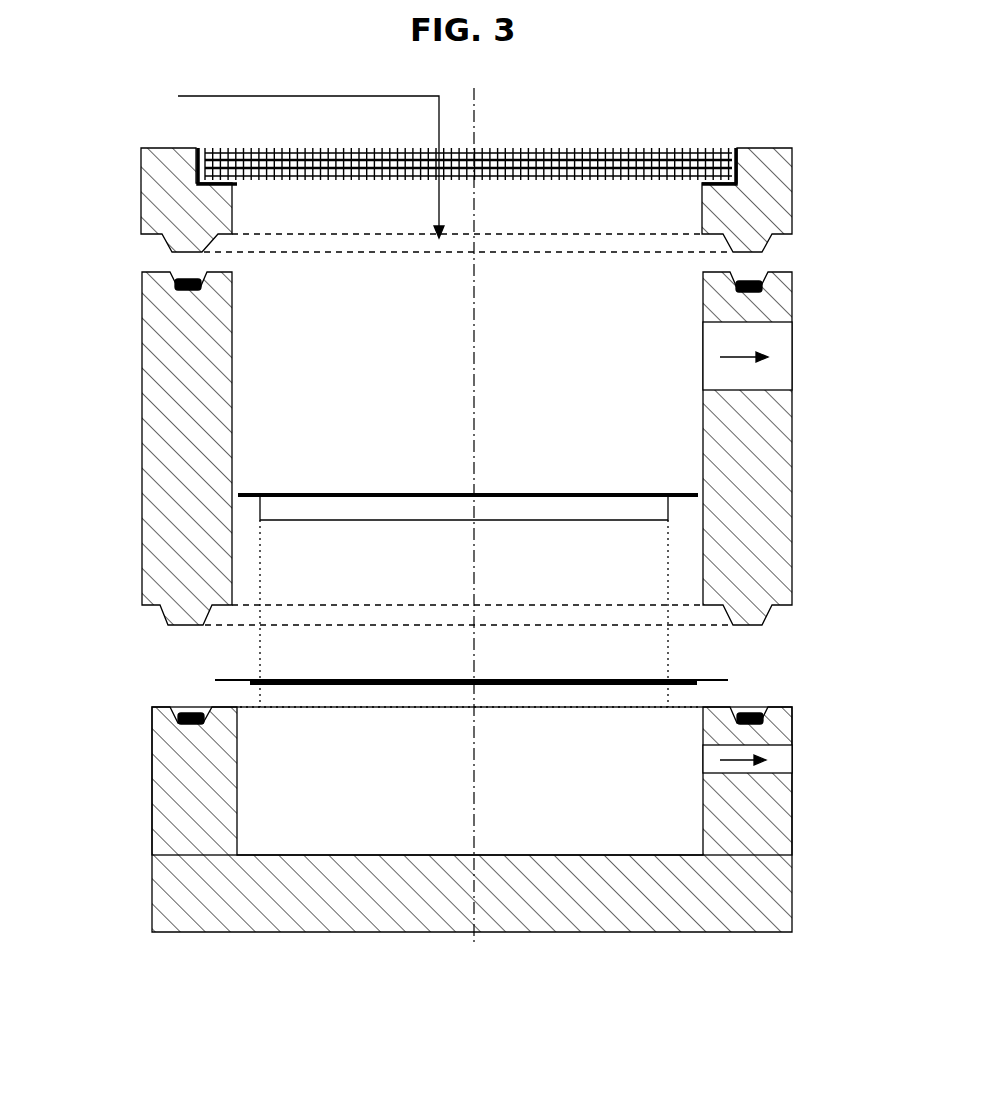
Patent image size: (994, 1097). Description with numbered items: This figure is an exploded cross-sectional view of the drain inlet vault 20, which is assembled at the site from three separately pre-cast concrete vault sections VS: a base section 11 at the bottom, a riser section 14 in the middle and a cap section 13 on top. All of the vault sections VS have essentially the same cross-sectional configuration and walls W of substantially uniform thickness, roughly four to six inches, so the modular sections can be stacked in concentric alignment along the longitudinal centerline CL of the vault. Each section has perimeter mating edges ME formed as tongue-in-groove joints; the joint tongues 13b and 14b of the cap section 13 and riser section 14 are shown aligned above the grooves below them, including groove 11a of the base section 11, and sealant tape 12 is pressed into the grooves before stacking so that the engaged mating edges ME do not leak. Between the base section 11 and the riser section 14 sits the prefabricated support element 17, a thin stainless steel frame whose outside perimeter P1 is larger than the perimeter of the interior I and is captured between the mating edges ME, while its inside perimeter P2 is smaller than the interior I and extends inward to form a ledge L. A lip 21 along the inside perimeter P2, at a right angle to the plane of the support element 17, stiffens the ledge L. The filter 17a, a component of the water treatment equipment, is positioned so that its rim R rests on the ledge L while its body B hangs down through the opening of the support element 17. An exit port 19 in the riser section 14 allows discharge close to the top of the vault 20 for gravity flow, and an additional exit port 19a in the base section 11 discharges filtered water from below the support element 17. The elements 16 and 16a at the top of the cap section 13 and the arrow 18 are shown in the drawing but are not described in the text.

The base section 11 is at (247, 792).
The groove 11a is at (158, 714).
The sealant tape 12 is at (762, 292).
The cap section 13 is at (141, 192).
The tongue 13b is at (768, 244).
The riser section 14 is at (233, 420).
The tongue 14b is at (768, 622).
The grid electrode 16 is at (355, 150).
The grid holder 16a is at (240, 186).
The support element 17 is at (430, 681).
The filter 17a is at (433, 512).
The gas flow 18 is at (293, 161).
The exit port 19 is at (726, 378).
The additional exit port 19a is at (780, 762).
The drain inlet vault 20 is at (530, 933).
The lip 21 is at (445, 688).
The longitudinal centerline CL is at (477, 392).
The interior I is at (524, 278).
The vault sections VS is at (793, 190).
The walls W is at (702, 208).
The mating edge ME is at (148, 234).
The body B is at (576, 512).
The rim R is at (690, 493).
The ledge L is at (712, 680).
The outside perimeter P1 is at (728, 680).
The inside perimeter P2 is at (690, 688).